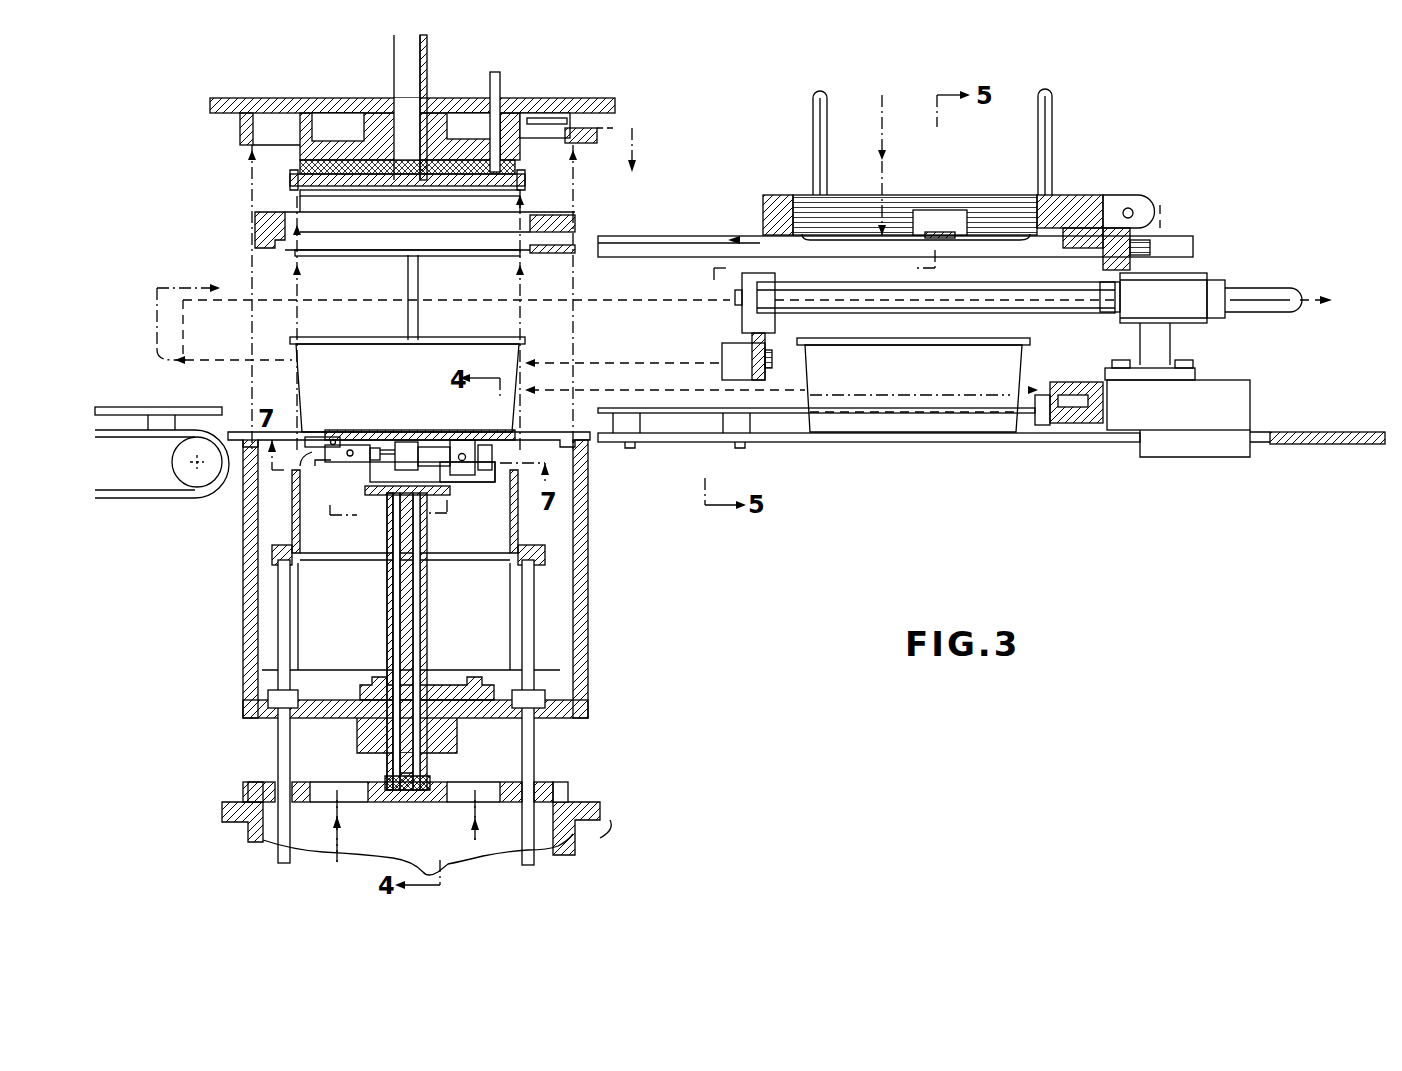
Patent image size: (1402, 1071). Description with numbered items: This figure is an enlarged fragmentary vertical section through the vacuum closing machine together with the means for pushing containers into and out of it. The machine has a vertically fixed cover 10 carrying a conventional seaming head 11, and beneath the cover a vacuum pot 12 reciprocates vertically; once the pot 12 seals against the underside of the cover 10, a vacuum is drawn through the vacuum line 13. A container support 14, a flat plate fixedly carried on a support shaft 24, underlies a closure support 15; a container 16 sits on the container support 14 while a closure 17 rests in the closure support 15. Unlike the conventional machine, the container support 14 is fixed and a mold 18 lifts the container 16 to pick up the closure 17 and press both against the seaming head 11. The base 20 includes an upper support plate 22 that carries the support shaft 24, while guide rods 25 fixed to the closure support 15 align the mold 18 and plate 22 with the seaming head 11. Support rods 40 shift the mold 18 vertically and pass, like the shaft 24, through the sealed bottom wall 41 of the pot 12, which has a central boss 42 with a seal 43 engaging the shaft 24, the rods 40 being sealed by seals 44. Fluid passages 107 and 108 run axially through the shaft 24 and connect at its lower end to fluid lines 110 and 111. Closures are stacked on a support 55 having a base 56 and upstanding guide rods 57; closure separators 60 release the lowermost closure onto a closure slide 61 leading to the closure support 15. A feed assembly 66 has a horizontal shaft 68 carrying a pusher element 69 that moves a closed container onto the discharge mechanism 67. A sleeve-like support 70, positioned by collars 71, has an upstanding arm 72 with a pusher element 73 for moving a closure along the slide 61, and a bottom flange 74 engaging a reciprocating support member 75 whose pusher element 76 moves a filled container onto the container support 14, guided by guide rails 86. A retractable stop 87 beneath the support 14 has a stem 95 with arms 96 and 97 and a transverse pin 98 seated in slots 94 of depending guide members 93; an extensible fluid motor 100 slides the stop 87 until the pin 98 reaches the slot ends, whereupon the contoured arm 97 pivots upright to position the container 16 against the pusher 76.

The cover 10 is at (544, 103).
The seaming head 11 is at (522, 167).
The vacuum pot 12 is at (595, 602).
The vacuum line 13 is at (617, 128).
The container support 14 is at (422, 428).
The closure support 15 is at (526, 210).
The container 16 is at (440, 355).
The closure 17 is at (332, 255).
The mold 18 is at (328, 558).
The base 20 is at (600, 799).
The upper support plate 22 is at (395, 804).
The support shaft 24 is at (436, 637).
The guide rods 25 is at (421, 277).
The support rods 40 is at (294, 743).
The bottom wall 41 is at (480, 690).
The central boss 42 is at (461, 743).
The seal 43 is at (431, 688).
The seals 44 is at (298, 688).
The support 55 is at (1080, 183).
The base 56 is at (765, 195).
The guide rods 57 is at (812, 132).
The closure separators 60 is at (945, 210).
The closure slide 61 is at (700, 234).
The feed assembly 66 is at (1270, 263).
The discharge mechanism 67 is at (158, 498).
The shaft 68 is at (1270, 300).
The pusher element 69 is at (728, 348).
The sleeve-like support 70 is at (1188, 267).
The collars 71 is at (1221, 283).
The upstanding arm 72 is at (1140, 260).
The pusher element 73 is at (1067, 250).
The bottom flange 74 is at (1198, 380).
The support member 75 is at (1233, 398).
The pusher element 76 is at (1045, 425).
The guide rails 86 is at (677, 414).
The retractable stop 87 is at (328, 470).
The guide members 93 is at (332, 438).
The slots 94 is at (345, 446).
The stem 95 is at (345, 468).
The arm 96 is at (404, 442).
The arm 97 is at (313, 468).
The transverse pin 98 is at (368, 446).
The extensible fluid motor 100 is at (475, 473).
The fluid passage 107 is at (388, 594).
The fluid passage 108 is at (435, 602).
The fluid line 110 is at (338, 816).
The fluid line 111 is at (480, 812).